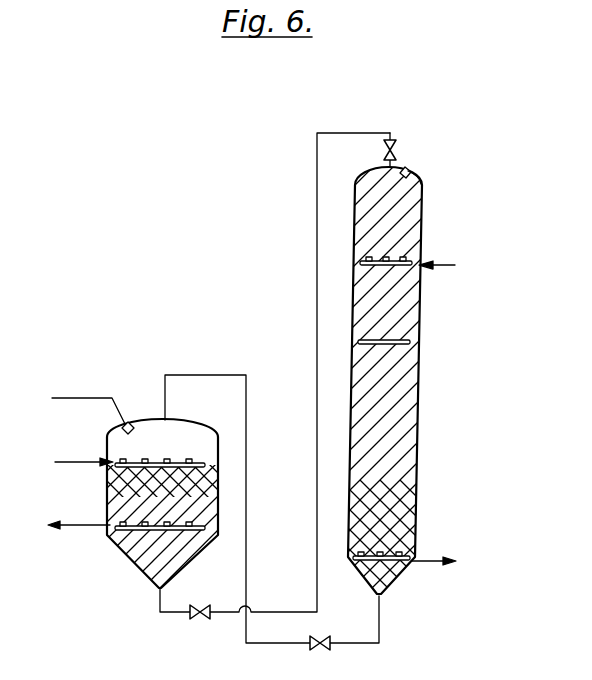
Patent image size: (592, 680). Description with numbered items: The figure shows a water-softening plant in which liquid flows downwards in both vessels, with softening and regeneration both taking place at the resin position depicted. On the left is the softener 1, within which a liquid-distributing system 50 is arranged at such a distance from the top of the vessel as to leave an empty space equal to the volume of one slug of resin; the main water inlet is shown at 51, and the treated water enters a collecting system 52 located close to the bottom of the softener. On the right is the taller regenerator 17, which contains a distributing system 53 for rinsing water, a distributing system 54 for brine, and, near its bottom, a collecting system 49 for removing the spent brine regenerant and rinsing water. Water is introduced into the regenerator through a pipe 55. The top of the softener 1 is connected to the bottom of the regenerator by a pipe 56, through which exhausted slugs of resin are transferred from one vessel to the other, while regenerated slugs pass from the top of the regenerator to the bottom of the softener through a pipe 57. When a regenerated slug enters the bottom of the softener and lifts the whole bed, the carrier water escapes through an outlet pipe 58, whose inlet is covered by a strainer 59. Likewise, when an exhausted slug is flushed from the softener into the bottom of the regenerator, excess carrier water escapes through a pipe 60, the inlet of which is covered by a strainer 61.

The softener 1 is at (107, 438).
The regenerator 17 is at (423, 216).
The collecting system 49 is at (427, 558).
The liquid-distributing system 50 is at (167, 462).
The main water inlet 51 is at (58, 460).
The collecting system 52 is at (126, 540).
The distributing system for rinsing water 53 is at (396, 258).
The distributing system for brine 54 is at (412, 342).
The pipe 55 is at (455, 266).
The pipe 56 is at (207, 374).
The pipe 57 is at (346, 132).
The outlet pipe 58 is at (90, 397).
The strainer 59 is at (130, 424).
The pipe 60 is at (407, 170).
The strainer 61 is at (418, 175).